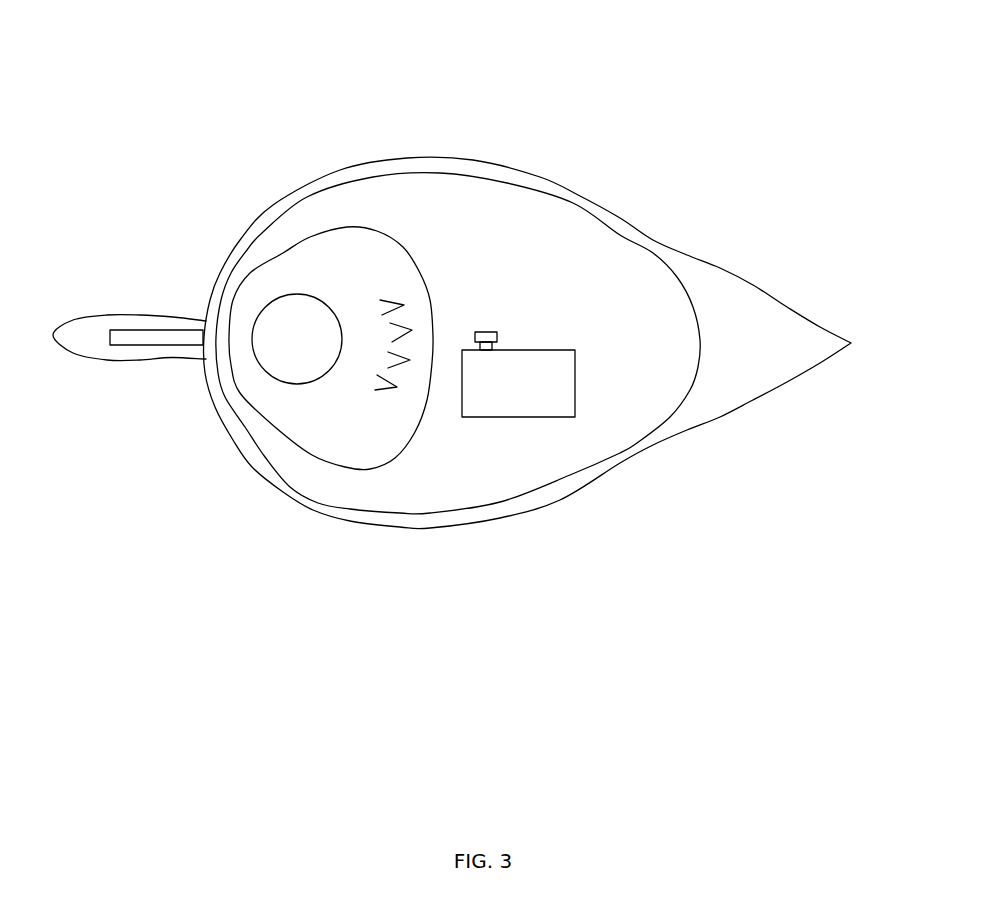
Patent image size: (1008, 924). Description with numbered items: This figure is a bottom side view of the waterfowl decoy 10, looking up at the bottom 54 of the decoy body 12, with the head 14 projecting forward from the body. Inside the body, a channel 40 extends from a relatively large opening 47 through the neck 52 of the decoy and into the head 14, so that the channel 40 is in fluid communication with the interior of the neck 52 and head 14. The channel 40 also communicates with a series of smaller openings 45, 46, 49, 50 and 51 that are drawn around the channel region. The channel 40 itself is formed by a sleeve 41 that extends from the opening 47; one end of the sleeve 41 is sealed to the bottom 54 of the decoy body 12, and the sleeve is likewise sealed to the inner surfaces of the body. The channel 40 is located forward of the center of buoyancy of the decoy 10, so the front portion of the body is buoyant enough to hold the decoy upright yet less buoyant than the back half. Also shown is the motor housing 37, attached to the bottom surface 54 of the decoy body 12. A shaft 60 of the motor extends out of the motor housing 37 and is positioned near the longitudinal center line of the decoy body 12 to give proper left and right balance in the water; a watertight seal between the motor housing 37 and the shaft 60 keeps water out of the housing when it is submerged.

The decoy 10 is at (532, 122).
The decoy body 12 is at (610, 213).
The head 14 is at (190, 360).
The opening 49 is at (128, 347).
The channel 40 is at (287, 265).
The sleeve 41 is at (330, 230).
The opening 47 is at (313, 455).
The neck 52 is at (325, 303).
The opening 46 is at (395, 303).
The opening 45 is at (405, 330).
The opening 50 is at (400, 357).
The opening 51 is at (387, 393).
The motor housing 37 is at (545, 350).
The shaft 60 is at (497, 340).
The bottom 54 is at (433, 502).